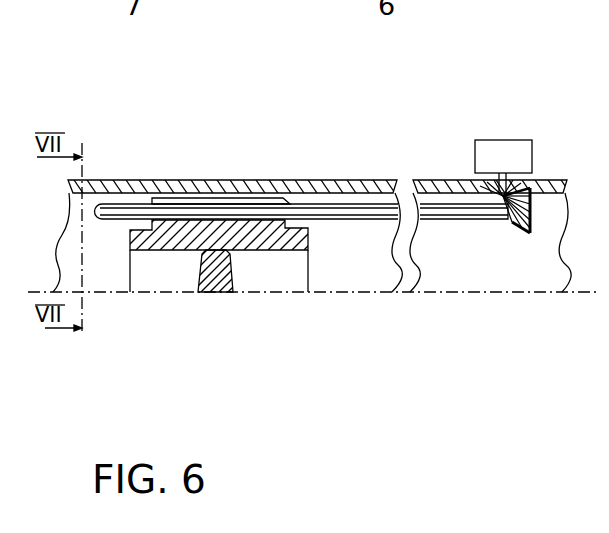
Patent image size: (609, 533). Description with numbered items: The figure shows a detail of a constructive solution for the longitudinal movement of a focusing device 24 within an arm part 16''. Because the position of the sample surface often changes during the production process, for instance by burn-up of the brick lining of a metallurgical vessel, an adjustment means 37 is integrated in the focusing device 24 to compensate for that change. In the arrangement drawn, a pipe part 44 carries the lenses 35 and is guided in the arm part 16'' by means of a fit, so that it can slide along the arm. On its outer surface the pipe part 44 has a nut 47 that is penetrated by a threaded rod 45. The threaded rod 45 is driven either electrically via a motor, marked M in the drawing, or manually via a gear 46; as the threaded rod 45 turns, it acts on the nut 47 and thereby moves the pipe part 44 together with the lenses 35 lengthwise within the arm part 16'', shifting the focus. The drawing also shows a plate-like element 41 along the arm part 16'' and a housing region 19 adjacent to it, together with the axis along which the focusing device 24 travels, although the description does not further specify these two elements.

The arm part 16'' is at (315, 130).
The plate 41 is at (147, 187).
The nut 47 is at (215, 200).
The threaded rod 45 is at (363, 213).
The pipe part 44 is at (270, 238).
The lenses 35 is at (205, 288).
The focusing device 24 is at (224, 302).
The housing 19 is at (440, 272).
The adjustment means 37 is at (447, 152).
The gear 46 is at (508, 233).